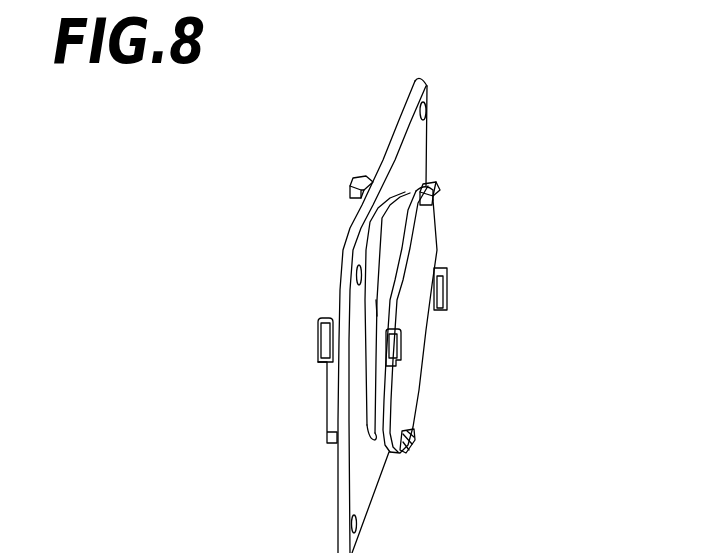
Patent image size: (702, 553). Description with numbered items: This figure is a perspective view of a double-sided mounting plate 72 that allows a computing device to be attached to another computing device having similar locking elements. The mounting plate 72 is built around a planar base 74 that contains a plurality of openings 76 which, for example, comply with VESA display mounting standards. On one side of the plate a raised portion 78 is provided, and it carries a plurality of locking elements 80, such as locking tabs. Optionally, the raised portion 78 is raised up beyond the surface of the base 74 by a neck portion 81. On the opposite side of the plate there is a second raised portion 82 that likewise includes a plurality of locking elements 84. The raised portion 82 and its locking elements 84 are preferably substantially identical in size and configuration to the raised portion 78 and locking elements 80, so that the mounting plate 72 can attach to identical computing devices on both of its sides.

The double-sided mounting plate 72 is at (244, 158).
The planar base 74 is at (417, 153).
The openings 76 is at (428, 110).
The raised portion 78 is at (415, 317).
The locking elements 80 is at (438, 192).
The neck portion 81 is at (375, 307).
The second raised portion 82 is at (358, 222).
The locking elements 84 is at (352, 191).